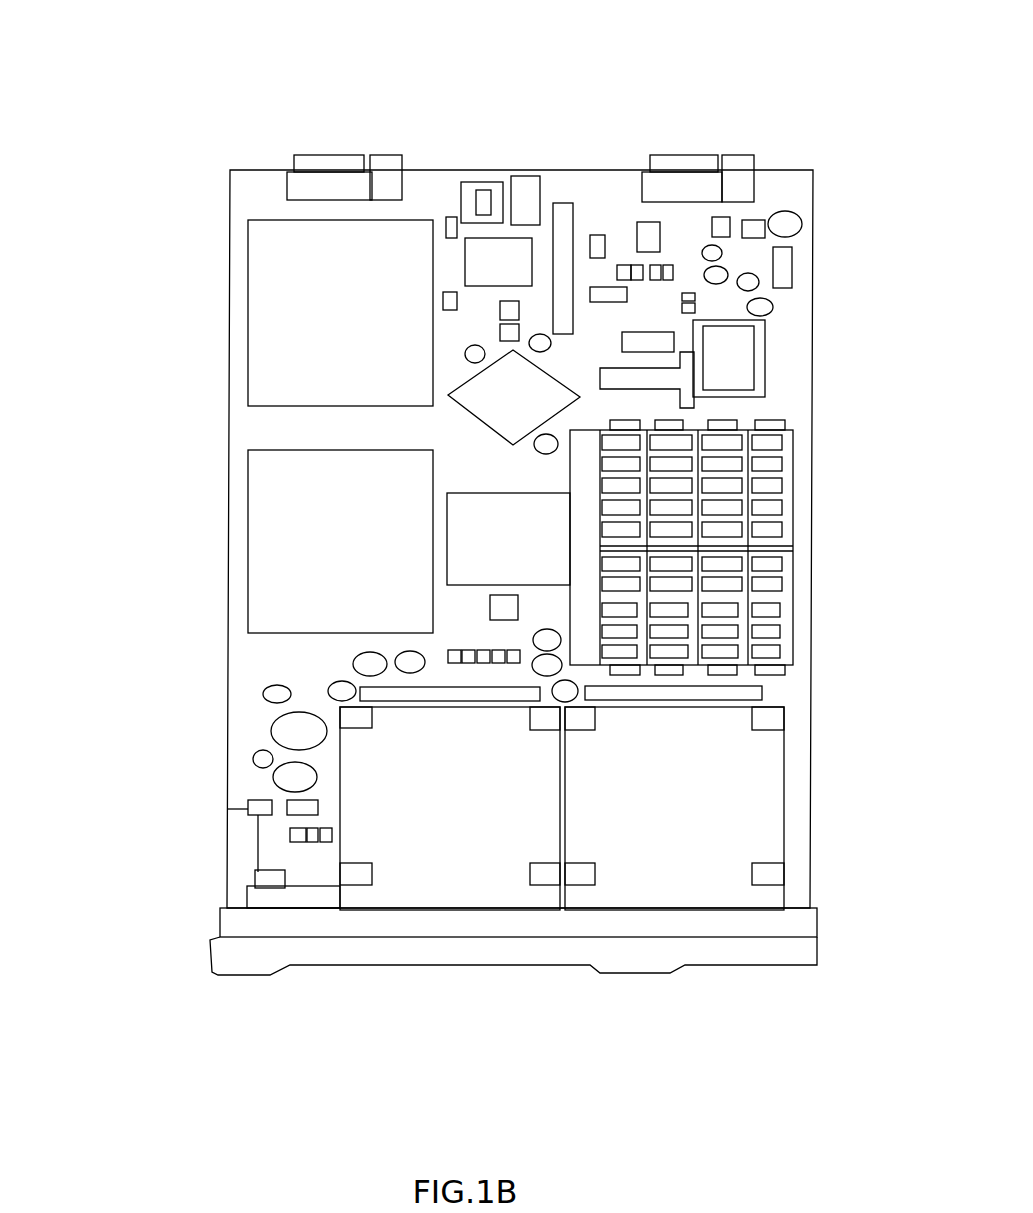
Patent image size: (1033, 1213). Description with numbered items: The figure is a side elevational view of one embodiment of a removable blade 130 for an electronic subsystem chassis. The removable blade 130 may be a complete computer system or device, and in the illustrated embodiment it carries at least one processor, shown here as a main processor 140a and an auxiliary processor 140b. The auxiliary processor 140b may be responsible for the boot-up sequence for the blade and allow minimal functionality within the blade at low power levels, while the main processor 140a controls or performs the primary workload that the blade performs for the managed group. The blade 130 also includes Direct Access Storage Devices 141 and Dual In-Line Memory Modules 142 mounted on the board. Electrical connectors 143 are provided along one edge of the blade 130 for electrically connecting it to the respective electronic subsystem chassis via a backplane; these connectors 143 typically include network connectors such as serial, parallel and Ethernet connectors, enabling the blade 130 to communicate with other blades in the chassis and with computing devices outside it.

The removable blade 130 is at (227, 725).
The electrical connectors 143 is at (330, 155).
The Direct Access Storage Devices (DASD) 141 is at (313, 336).
The Dual In-Line Memory Modules (DIMMs) 142 is at (785, 524).
The main processor 140a is at (398, 825).
The auxiliary processor 140b is at (630, 825).